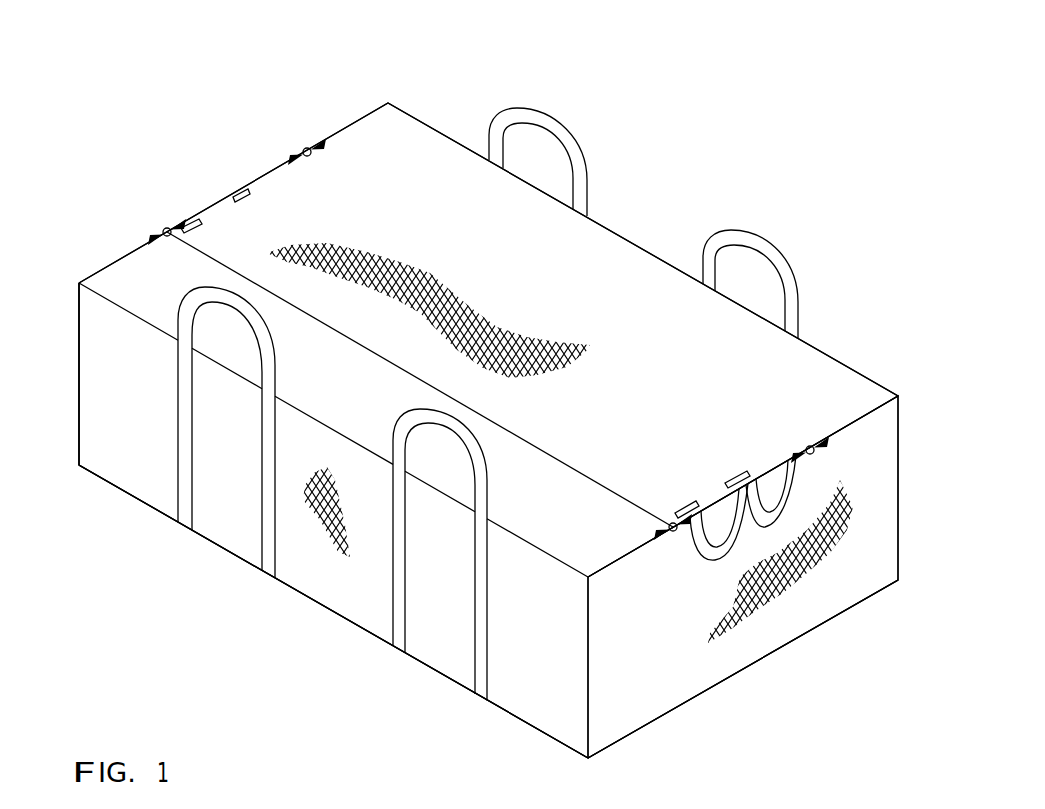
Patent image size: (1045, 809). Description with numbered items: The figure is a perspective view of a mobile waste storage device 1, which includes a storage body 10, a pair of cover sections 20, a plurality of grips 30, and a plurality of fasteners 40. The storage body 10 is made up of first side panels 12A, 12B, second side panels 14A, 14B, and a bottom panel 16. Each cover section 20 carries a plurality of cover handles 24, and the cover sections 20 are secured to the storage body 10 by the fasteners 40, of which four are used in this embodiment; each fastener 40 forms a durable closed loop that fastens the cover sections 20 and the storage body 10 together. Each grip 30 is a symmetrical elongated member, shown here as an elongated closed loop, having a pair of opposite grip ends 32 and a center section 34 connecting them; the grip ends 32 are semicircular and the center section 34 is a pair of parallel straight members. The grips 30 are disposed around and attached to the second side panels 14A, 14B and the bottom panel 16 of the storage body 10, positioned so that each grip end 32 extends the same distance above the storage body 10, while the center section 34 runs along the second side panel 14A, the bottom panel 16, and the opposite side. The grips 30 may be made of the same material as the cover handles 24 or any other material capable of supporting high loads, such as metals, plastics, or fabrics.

The mobile waste storage device 1 is at (205, 93).
The storage body 10 is at (917, 447).
The first side panel 12A is at (687, 683).
The first side panel 12B is at (62, 333).
The second side panel 14A is at (333, 593).
The second side panel 14B is at (903, 502).
The bottom panel 16 is at (531, 745).
The cover section 20 is at (107, 265).
The cover handle 24 is at (778, 568).
The grip 30 is at (465, 404).
The grip end 32 is at (198, 292).
The center section 34 is at (187, 470).
The fastener 40 is at (280, 137).